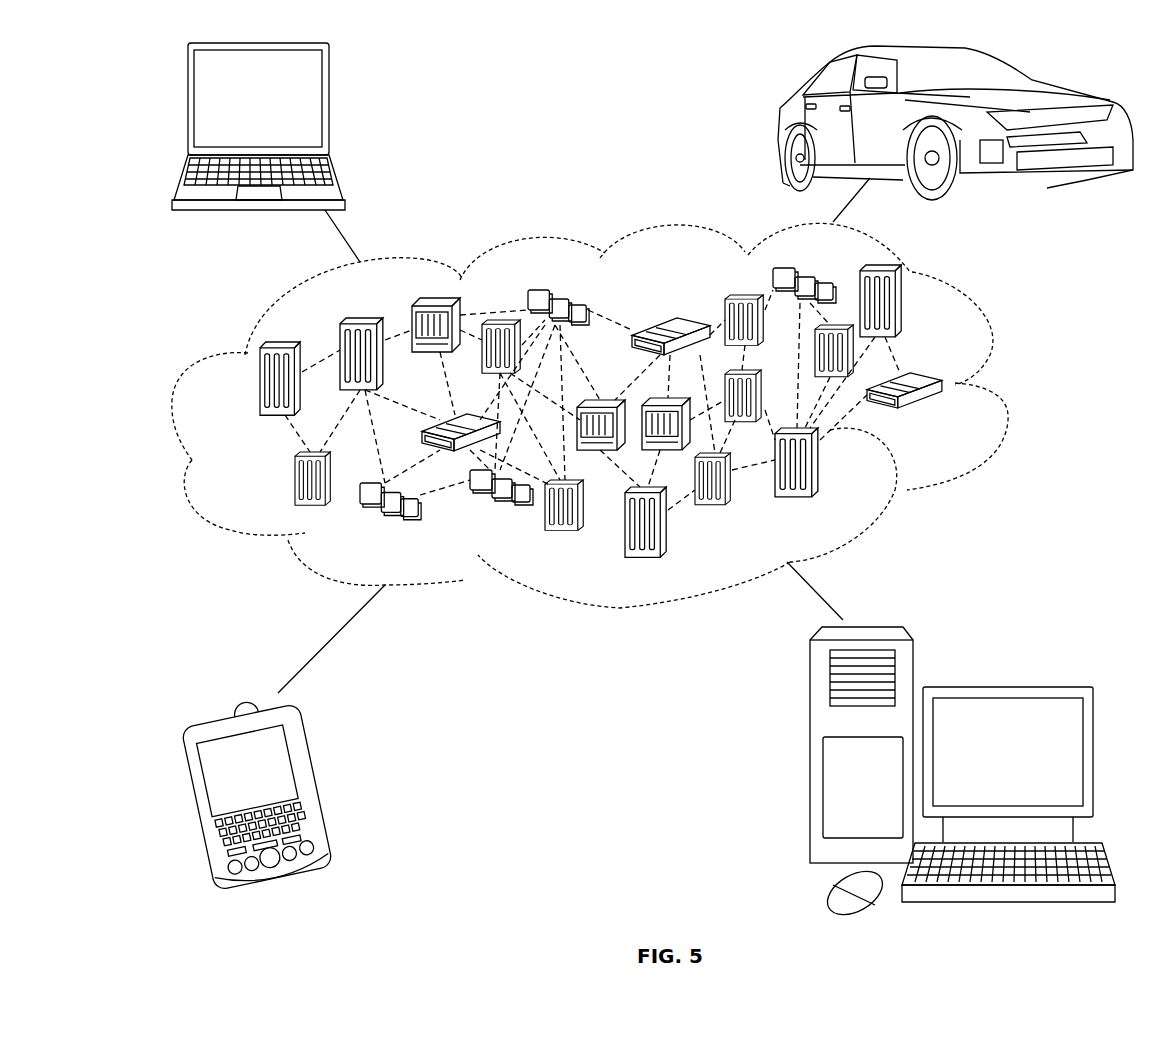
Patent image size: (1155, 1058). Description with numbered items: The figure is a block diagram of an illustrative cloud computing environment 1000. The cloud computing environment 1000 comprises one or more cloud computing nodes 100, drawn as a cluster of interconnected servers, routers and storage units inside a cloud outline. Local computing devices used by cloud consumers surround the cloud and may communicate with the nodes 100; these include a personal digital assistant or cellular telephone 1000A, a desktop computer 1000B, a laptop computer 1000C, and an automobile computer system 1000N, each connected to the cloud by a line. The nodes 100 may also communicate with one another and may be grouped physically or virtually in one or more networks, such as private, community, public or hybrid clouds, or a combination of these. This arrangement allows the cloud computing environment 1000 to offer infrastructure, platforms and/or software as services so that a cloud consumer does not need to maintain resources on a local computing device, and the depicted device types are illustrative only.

The cloud computing nodes 100 is at (952, 425).
The cloud computing environment 1000 is at (1005, 392).
The personal digital assistant (PDA) or cellular telephone 1000A is at (318, 786).
The desktop computer 1000B is at (1005, 685).
The laptop computer 1000C is at (328, 108).
The automobile computer system 1000N is at (778, 124).